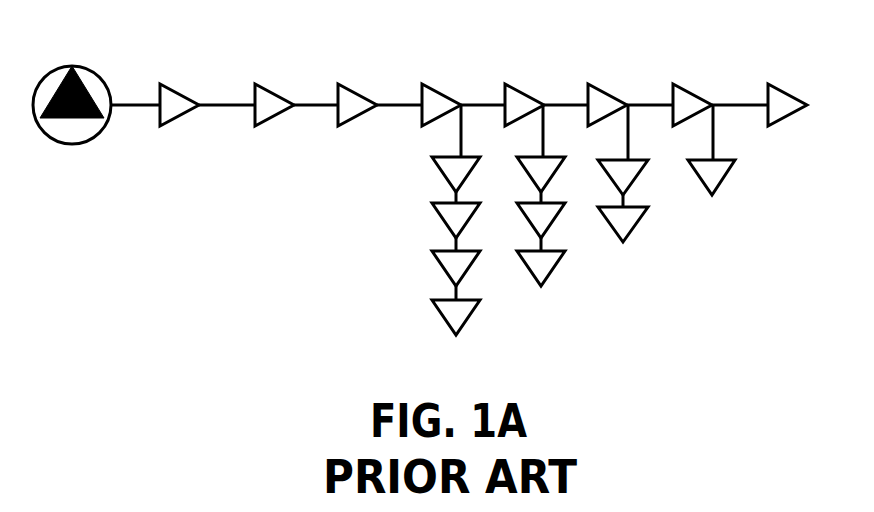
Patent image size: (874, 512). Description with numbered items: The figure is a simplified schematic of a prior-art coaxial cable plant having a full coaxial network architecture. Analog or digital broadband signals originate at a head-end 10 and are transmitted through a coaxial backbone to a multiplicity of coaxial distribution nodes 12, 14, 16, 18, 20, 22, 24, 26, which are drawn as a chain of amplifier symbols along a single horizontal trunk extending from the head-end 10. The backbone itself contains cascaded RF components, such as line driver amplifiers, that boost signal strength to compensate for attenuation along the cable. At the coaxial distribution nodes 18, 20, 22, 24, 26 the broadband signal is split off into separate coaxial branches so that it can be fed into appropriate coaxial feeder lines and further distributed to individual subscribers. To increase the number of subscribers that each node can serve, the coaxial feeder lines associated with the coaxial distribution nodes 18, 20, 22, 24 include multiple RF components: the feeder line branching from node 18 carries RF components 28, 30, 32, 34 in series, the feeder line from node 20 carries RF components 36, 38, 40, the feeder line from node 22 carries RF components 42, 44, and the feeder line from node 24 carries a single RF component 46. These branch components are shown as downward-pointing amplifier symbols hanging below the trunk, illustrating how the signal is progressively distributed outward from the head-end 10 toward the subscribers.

The head-end 10 is at (98, 72).
The coaxial distribution node 12 is at (170, 89).
The coaxial distribution node 14 is at (272, 91).
The coaxial distribution node 16 is at (355, 91).
The coaxial distribution node 18 is at (438, 91).
The coaxial distribution node 20 is at (521, 91).
The coaxial distribution node 22 is at (604, 91).
The coaxial distribution node 24 is at (689, 91).
The coaxial distribution node 26 is at (784, 91).
The RF component 28 is at (466, 157).
The RF component 30 is at (458, 200).
The RF component 32 is at (458, 247).
The RF component 34 is at (458, 296).
The RF component 36 is at (551, 157).
The RF component 38 is at (543, 200).
The RF component 40 is at (543, 247).
The RF component 42 is at (633, 160).
The RF component 44 is at (625, 204).
The RF component 46 is at (722, 160).